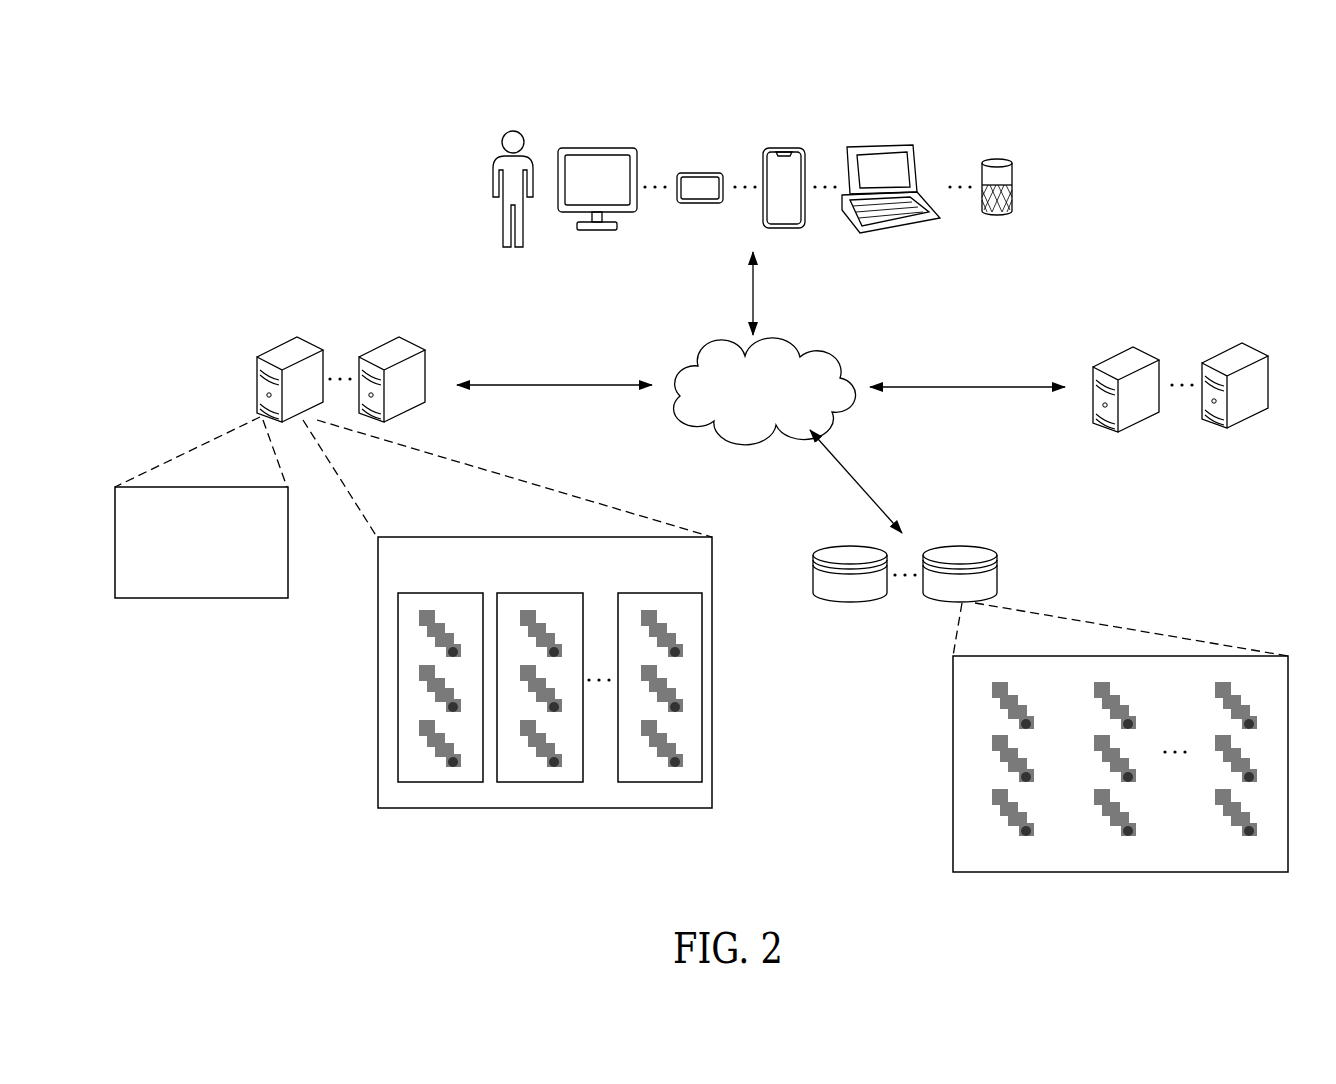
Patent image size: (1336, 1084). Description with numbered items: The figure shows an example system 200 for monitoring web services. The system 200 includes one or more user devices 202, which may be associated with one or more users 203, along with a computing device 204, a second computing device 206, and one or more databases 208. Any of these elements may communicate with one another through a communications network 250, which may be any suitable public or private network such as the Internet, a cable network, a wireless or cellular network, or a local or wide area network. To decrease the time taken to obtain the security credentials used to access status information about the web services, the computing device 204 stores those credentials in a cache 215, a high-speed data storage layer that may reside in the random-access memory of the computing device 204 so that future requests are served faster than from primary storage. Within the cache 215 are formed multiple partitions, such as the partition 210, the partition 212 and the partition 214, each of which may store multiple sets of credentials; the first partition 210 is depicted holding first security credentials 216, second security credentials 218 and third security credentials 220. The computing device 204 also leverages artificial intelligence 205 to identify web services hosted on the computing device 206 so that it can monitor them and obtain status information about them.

The system 200 is at (320, 84).
The user devices 202 is at (990, 137).
The users 203 is at (515, 130).
The computing device 204 is at (340, 312).
The artificial intelligence 205 is at (201, 542).
The computing device 206 is at (1170, 330).
The databases 208 is at (978, 525).
The partition 210 is at (432, 803).
The partition 212 is at (529, 807).
The partition 214 is at (658, 806).
The cache 215 is at (522, 704).
The first security credentials 216 is at (396, 635).
The second security credentials 218 is at (396, 682).
The third security credentials 220 is at (396, 726).
The communications network 250 is at (803, 356).